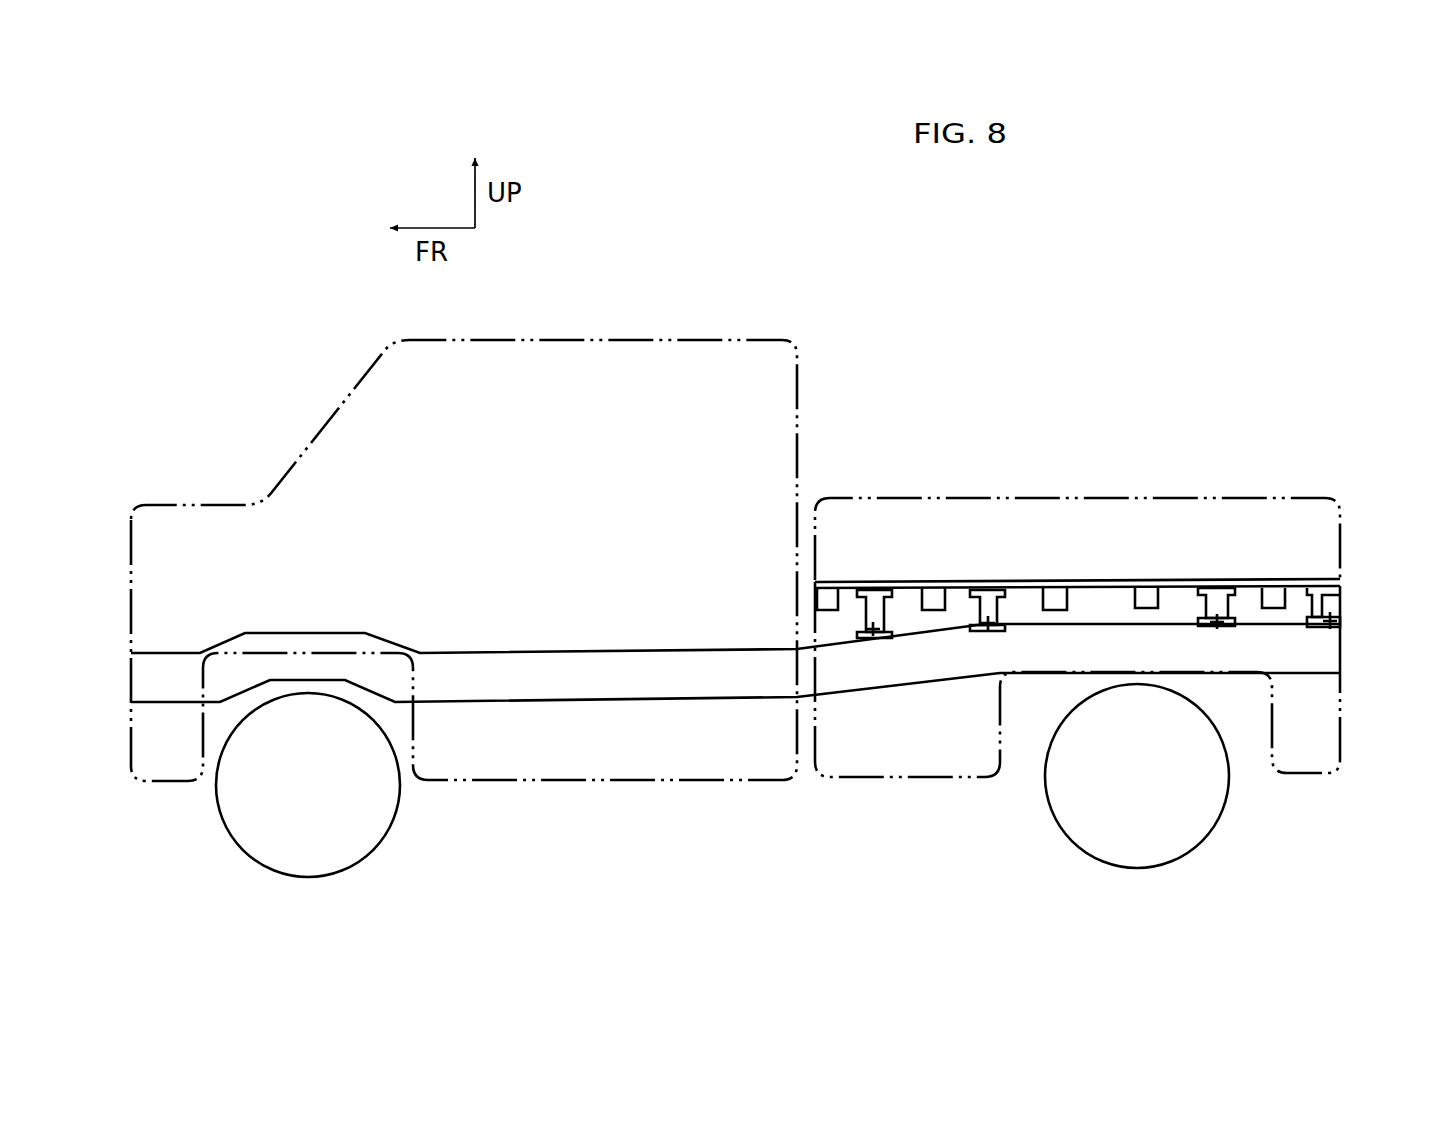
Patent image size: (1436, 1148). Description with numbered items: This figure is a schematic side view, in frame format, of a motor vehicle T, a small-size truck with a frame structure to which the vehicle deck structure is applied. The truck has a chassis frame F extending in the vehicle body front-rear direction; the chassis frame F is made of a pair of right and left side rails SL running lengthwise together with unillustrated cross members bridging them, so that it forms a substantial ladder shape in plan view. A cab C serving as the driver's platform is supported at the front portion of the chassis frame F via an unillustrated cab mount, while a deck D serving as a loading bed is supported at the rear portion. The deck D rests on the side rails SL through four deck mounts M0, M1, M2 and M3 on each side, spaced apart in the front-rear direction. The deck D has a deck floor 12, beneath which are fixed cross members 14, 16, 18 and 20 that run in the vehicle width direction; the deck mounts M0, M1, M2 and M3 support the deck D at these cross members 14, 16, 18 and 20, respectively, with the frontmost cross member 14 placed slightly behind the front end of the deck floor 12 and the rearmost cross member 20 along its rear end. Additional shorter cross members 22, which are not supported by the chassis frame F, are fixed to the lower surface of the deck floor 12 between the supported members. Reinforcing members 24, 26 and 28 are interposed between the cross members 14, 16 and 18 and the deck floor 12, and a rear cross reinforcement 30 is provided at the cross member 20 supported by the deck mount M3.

The deck floor 12 is at (1117, 580).
The cross member 14 is at (866, 622).
The cross member 16 is at (996, 607).
The cross member 18 is at (1228, 607).
The cross member 20 is at (1331, 602).
The cross members 22 is at (828, 590).
The reinforcing member 24 is at (874, 590).
The reinforcing member 26 is at (995, 590).
The reinforcing member 28 is at (1213, 588).
The rear cross reinforcement 30 is at (1292, 588).
The deck mount M0 is at (899, 619).
The deck mount M1 is at (982, 637).
The deck mount M2 is at (1223, 635).
The deck mount M3 is at (1333, 636).
The motor vehicle T is at (871, 281).
The cab C is at (703, 339).
The deck D is at (989, 495).
The chassis frame F is at (625, 646).
The side rails SL is at (717, 672).